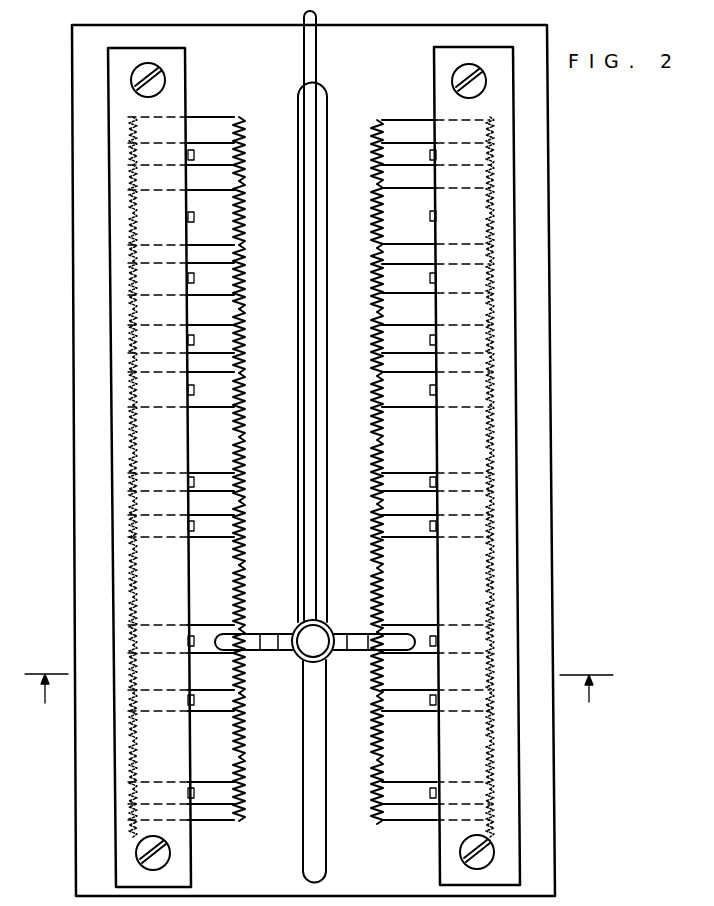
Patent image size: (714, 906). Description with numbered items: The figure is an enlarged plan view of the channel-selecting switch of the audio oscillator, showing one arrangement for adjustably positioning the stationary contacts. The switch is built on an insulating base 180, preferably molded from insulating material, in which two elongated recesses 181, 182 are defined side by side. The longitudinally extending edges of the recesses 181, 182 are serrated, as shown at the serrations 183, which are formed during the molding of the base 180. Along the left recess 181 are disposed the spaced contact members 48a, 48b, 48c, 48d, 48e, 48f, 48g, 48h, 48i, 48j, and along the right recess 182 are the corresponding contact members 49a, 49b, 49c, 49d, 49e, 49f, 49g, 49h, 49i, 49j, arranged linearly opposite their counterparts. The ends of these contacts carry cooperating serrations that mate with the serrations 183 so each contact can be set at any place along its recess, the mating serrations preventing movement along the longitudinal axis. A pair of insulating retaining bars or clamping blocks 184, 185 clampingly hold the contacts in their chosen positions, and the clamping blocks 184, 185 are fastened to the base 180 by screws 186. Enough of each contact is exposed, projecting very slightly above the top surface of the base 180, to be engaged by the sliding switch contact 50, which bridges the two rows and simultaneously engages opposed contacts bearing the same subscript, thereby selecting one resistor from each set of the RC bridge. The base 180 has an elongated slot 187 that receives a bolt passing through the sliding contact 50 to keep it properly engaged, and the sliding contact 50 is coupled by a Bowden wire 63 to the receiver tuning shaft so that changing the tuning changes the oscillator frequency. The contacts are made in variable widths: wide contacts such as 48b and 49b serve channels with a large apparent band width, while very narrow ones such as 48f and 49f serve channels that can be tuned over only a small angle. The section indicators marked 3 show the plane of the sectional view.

The insulating base 180 is at (551, 885).
The elongated recess 181 is at (206, 126).
The elongated recess 182 is at (410, 128).
The serrations 183 is at (230, 126).
The insulating retaining bar 184 is at (120, 832).
The insulating retaining bar 185 is at (511, 827).
The screws 186 is at (167, 75).
The elongated slot 187 is at (330, 856).
The Bowden wire 63 is at (316, 76).
The sliding switch contact 50 is at (355, 650).
The contact member 48a is at (229, 157).
The contact member 48b is at (229, 221).
The contact member 48c is at (229, 286).
The contact member 48d is at (229, 344).
The contact member 48e is at (229, 394).
The contact member 48f is at (229, 482).
The contact member 48g is at (229, 529).
The contact member 48h is at (229, 630).
The contact member 48i is at (229, 712).
The contact member 48j is at (229, 797).
The contact member 49a is at (376, 161).
The contact member 49b is at (376, 225).
The contact member 49c is at (376, 290).
The contact member 49d is at (376, 348).
The contact member 49e is at (376, 398).
The contact member 49f is at (376, 486).
The contact member 49g is at (376, 533).
The contact member 49h is at (400, 630).
The contact member 49i is at (376, 716).
The contact member 49j is at (376, 801).
The section line indicator 3 is at (319, 703).